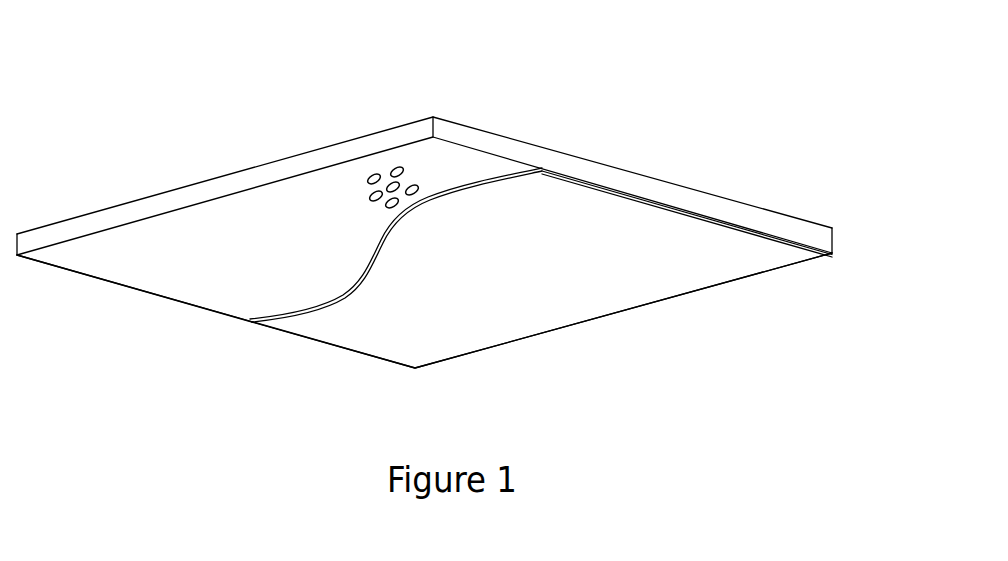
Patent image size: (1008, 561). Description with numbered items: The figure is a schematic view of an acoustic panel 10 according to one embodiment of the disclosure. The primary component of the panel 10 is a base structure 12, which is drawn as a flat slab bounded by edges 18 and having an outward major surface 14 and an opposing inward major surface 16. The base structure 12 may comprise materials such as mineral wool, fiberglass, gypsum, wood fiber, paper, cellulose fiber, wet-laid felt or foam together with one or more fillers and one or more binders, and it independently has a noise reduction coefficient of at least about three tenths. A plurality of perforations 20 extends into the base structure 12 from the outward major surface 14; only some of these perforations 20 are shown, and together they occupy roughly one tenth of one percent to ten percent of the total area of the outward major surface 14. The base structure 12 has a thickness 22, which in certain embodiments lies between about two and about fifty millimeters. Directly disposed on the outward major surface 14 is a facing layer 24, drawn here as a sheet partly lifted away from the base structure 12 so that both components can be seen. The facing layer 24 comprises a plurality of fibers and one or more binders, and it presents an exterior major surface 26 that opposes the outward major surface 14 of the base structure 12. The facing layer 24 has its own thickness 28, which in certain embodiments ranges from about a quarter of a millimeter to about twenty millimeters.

The panel 10 is at (597, 133).
The base structure 12 is at (110, 255).
The outward major surface 14 is at (153, 292).
The inward major surface 16 is at (222, 171).
The edges 18 is at (143, 212).
The perforations 20 is at (378, 180).
The thickness 22 is at (832, 241).
The facing layer 24 is at (470, 285).
The exterior major surface 26 is at (386, 298).
The thickness 28 is at (832, 254).